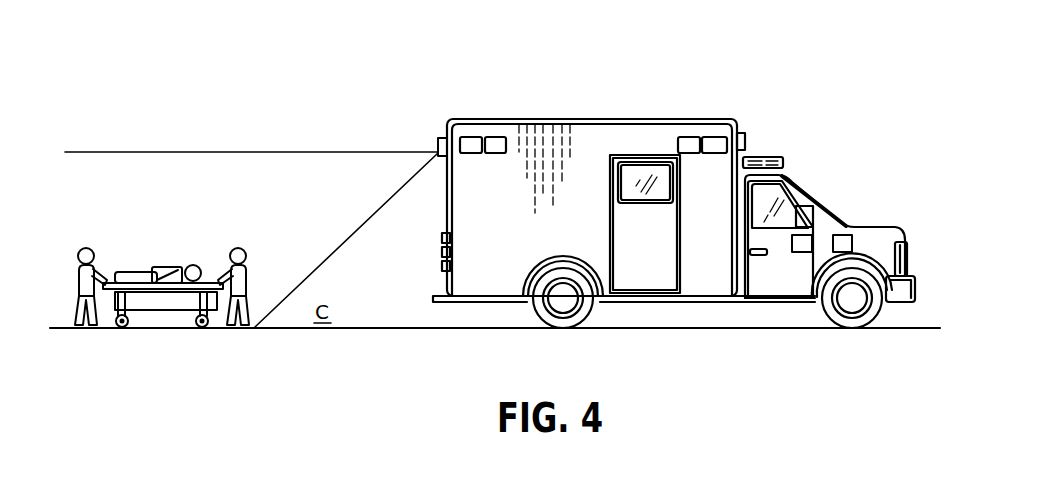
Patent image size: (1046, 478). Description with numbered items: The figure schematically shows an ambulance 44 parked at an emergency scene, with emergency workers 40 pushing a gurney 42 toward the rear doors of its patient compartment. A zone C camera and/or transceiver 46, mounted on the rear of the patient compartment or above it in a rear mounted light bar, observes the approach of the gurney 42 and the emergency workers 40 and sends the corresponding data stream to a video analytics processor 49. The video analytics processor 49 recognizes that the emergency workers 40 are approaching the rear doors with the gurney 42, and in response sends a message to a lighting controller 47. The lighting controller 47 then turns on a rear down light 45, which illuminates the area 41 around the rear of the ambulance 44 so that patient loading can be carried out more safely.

The emergency workers 40 is at (100, 251).
The area around the rear of the ambulance 41 is at (360, 223).
The gurney 42 is at (112, 312).
The ambulance 44 is at (613, 133).
The rear down light 45 is at (436, 167).
The zone C camera and/or transceiver 46 is at (447, 138).
The lighting controller 47 is at (806, 245).
The video analytics processor 49 is at (850, 234).